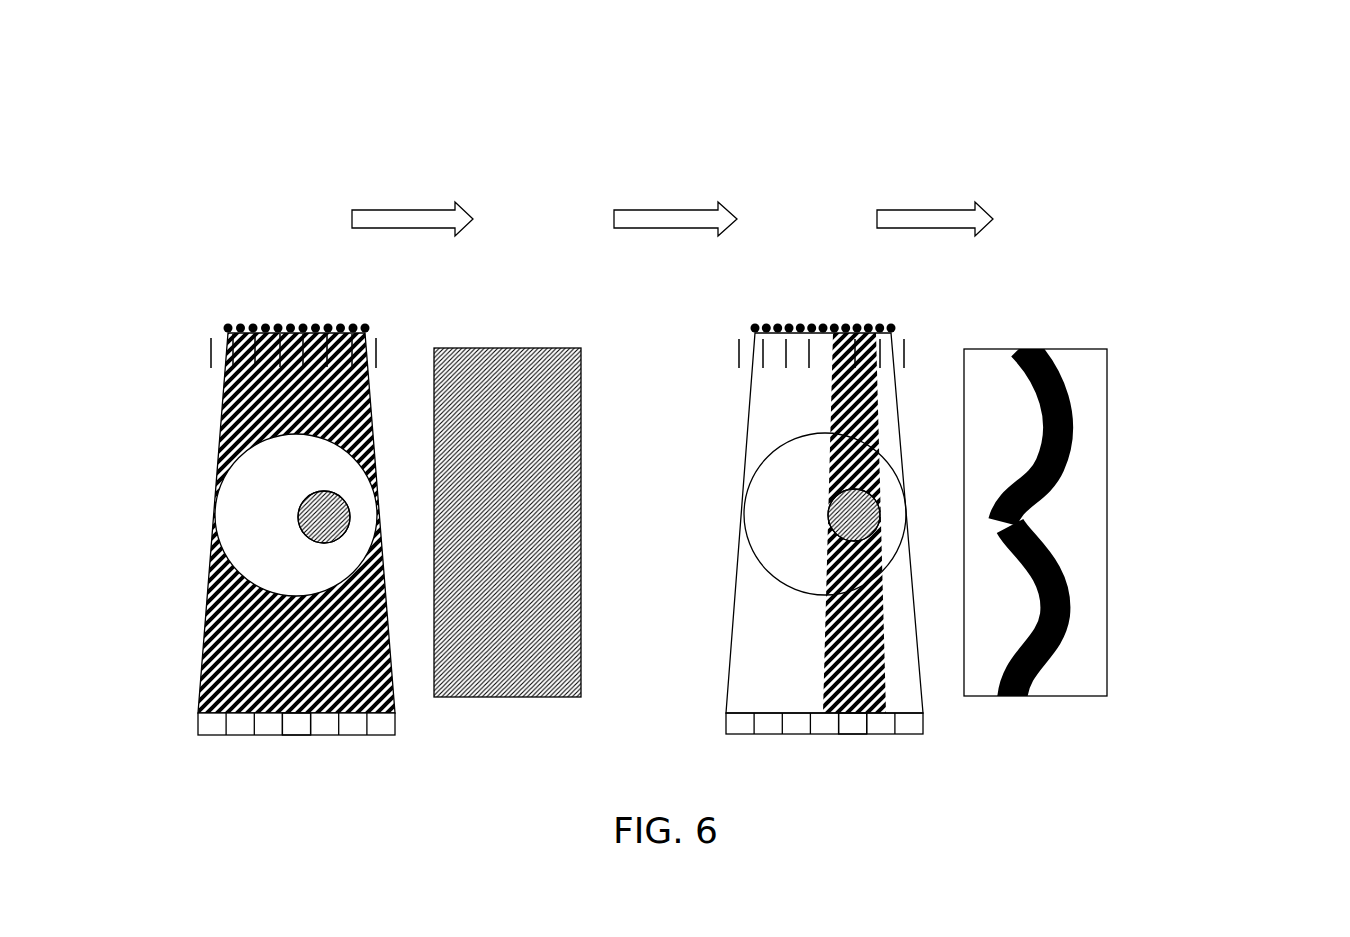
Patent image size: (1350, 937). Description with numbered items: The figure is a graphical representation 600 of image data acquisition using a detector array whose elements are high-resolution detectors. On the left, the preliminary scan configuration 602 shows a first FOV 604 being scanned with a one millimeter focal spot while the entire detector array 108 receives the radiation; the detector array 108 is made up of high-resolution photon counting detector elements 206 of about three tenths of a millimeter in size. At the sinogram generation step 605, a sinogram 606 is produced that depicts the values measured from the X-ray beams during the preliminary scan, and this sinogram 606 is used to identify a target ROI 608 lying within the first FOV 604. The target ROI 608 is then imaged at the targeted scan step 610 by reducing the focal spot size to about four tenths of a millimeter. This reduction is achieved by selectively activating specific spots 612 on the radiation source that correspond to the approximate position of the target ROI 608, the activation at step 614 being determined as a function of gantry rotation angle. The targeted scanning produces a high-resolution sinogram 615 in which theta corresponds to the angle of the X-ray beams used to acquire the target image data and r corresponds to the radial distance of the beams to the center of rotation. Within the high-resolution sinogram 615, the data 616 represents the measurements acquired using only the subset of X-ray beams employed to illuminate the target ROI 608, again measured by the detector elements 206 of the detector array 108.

The graphical representation 600 is at (1226, 70).
The preliminary scan configuration 602 is at (250, 258).
The first FOV 604 is at (283, 502).
The sinogram generation step 605 is at (558, 258).
The sinogram 606 is at (581, 554).
The target ROI 608 is at (351, 518).
The targeted scan step 610 is at (802, 258).
The specific spots 612 is at (833, 322).
The spot activation step 614 is at (1066, 258).
The high-resolution sinogram 615 is at (1108, 556).
The data 616 is at (1078, 421).
The detector array 108 is at (196, 722).
The high-resolution photon counting detector elements 206 is at (297, 736).